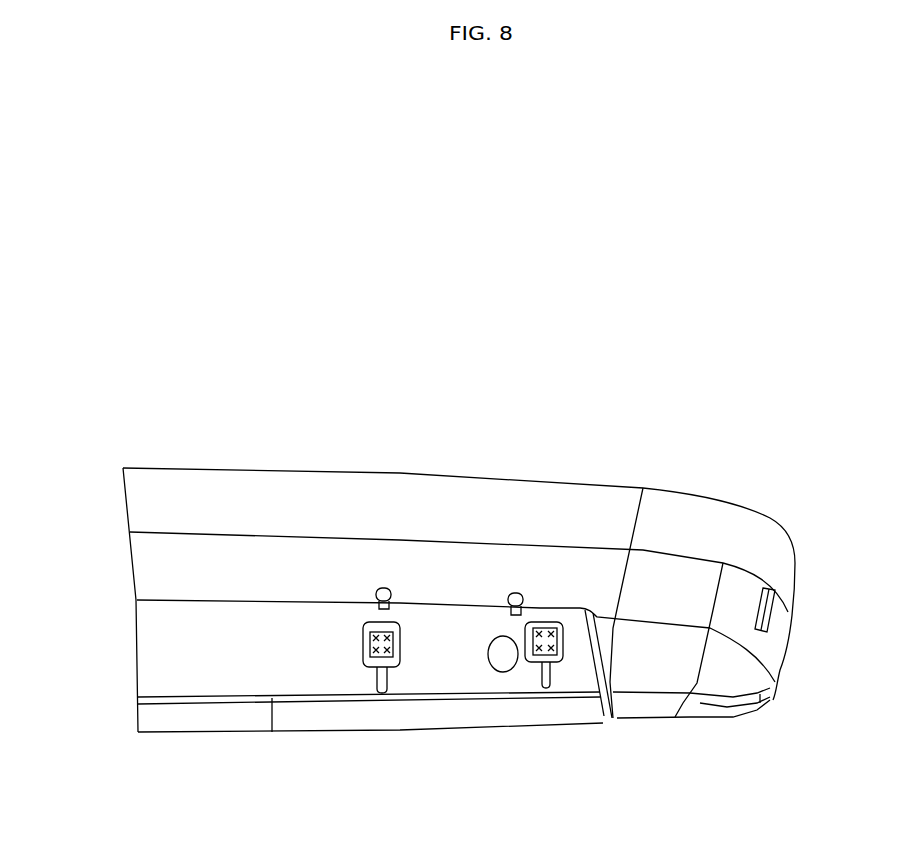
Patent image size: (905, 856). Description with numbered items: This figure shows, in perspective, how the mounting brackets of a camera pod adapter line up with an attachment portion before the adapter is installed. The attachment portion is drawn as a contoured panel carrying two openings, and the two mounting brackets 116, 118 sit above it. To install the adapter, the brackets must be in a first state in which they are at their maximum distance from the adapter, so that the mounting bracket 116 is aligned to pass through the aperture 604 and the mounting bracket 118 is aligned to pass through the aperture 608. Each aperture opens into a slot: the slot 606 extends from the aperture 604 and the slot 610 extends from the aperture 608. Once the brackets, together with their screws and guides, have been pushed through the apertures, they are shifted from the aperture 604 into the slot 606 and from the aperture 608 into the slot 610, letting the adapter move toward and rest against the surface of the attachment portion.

The mounting bracket 116 is at (543, 632).
The mounting bracket 118 is at (383, 632).
The aperture 604 is at (557, 628).
The slot 606 is at (545, 683).
The aperture 608 is at (363, 628).
The slot 610 is at (377, 680).